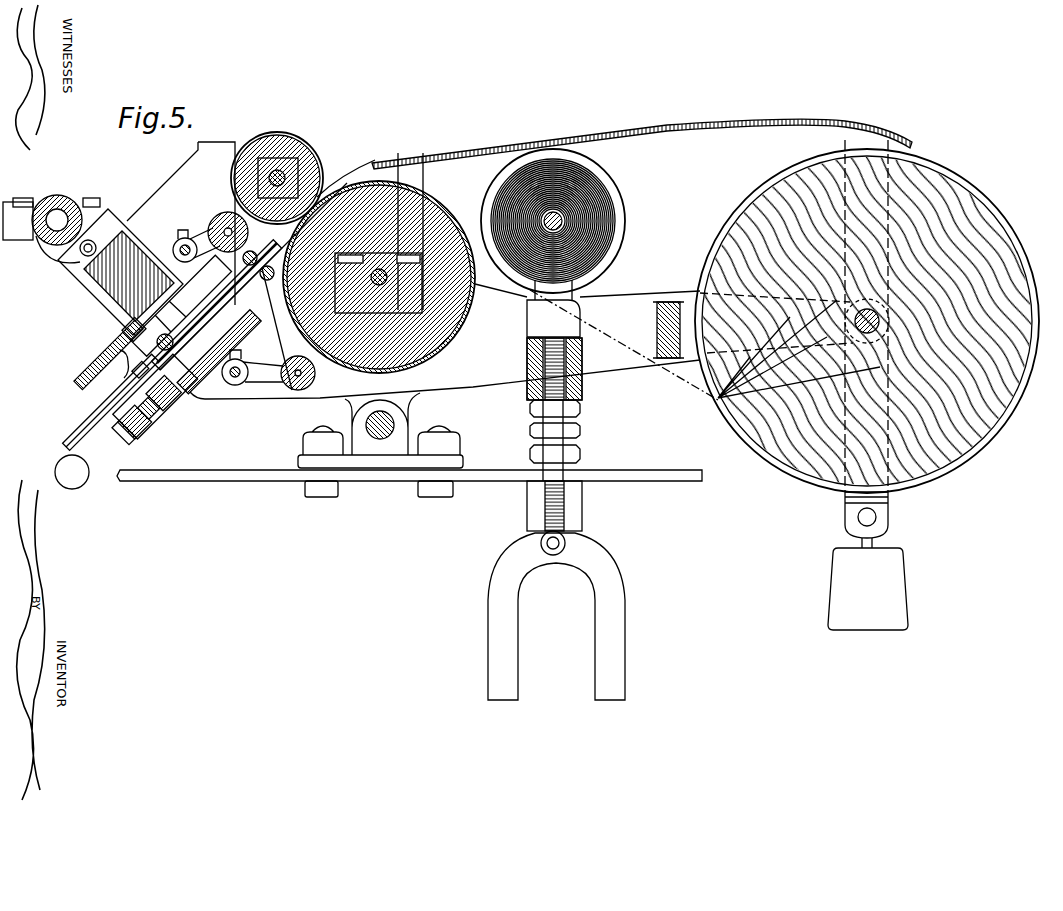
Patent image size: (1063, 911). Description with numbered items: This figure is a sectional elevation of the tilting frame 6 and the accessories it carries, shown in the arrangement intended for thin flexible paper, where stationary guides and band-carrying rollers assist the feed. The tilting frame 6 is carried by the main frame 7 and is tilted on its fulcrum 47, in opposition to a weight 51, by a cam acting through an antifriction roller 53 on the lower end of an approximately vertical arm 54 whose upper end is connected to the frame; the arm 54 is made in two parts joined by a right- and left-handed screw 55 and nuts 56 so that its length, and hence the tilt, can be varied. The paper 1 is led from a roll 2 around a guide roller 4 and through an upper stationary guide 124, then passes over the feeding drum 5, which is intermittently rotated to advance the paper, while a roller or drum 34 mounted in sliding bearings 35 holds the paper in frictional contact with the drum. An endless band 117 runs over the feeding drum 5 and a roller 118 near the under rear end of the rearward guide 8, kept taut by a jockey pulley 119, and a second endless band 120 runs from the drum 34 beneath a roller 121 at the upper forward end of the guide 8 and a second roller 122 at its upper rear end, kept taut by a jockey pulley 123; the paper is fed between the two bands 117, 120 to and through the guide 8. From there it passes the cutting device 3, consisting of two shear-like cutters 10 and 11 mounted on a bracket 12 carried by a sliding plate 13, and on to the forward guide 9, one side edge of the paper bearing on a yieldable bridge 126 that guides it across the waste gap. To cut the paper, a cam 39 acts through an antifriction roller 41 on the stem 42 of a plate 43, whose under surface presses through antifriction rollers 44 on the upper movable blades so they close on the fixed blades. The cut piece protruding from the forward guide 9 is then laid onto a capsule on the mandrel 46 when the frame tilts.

The paper 1 is at (373, 161).
The roll 2 is at (600, 192).
The cutting device 3 is at (127, 365).
The guide roller 4 is at (918, 458).
The feeding drum 5 is at (472, 307).
The tilting frame 6 is at (445, 401).
The main frame 7 is at (182, 481).
The rearward guide 8 is at (233, 278).
The forward guide 9 is at (86, 427).
The cutter 10 is at (137, 372).
The cutter 11 is at (158, 341).
The bracket 12 is at (187, 398).
The plate 13 is at (125, 436).
The roller or drum 34 is at (310, 143).
The bearings 35 is at (285, 140).
The cam 39 is at (40, 246).
The antifriction roller 41 is at (95, 238).
The stem 42 is at (118, 262).
The plate 43 is at (90, 377).
The antifriction rollers 44 is at (122, 338).
The mandrel 46 is at (66, 482).
The fulcrum 47 is at (366, 421).
The weight 51 is at (868, 561).
The antifriction roller 53 is at (566, 543).
The arm 54 is at (615, 636).
The right- and left-handed screw 55 is at (583, 385).
The nuts 56 is at (575, 458).
The endless band 117 is at (318, 385).
The roller 118 is at (248, 320).
The jockey pulley 119 is at (290, 392).
The endless band 120 is at (173, 307).
The roller 121 is at (176, 327).
The roller 122 is at (253, 251).
The jockey pulley 123 is at (224, 216).
The upper stationary guide 124 is at (560, 140).
The yieldable bridge 126 is at (158, 406).